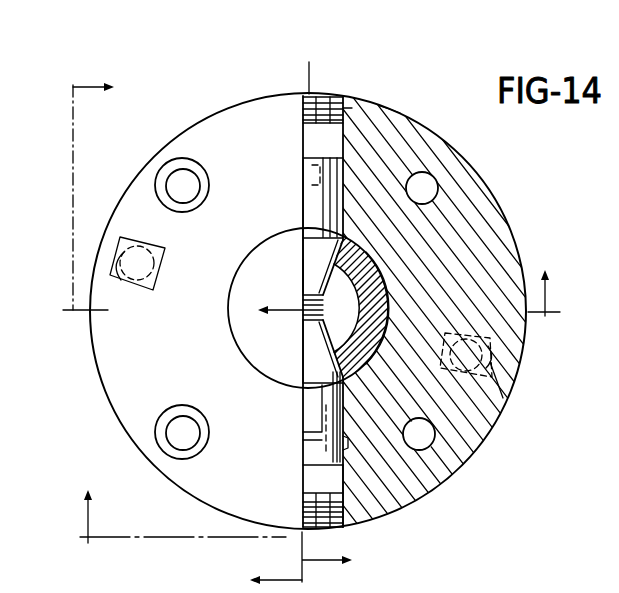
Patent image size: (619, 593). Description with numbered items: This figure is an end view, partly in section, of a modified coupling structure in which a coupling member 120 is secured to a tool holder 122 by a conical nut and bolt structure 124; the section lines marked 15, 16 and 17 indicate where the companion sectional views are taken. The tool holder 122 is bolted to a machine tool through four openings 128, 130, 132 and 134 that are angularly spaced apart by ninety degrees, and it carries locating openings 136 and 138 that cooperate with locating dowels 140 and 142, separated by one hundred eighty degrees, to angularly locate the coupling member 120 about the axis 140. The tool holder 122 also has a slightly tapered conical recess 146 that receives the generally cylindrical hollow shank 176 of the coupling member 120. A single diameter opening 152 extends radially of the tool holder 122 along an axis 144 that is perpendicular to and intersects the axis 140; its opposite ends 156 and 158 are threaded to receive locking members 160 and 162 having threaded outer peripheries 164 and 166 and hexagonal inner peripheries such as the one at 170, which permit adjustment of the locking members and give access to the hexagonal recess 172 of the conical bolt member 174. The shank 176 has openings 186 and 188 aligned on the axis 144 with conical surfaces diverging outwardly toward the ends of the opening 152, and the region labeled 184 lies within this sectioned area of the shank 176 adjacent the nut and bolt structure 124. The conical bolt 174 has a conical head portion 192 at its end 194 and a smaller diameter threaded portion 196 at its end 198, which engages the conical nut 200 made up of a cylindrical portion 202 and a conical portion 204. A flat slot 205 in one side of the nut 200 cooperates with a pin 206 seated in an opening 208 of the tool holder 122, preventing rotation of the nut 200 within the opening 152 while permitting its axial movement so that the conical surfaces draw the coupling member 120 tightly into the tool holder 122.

The section line 15- 15 is at (208, 326).
The section line 16- 16 is at (320, 406).
The section line 17- 17 is at (264, 444).
The coupling member 120 is at (350, 247).
The tool holder 122 is at (102, 387).
The conical nut and bolt structure 124 is at (343, 205).
The opening 128 is at (437, 438).
The opening 130 is at (432, 180).
The opening 132 is at (186, 178).
The opening 134 is at (175, 428).
The locating opening 136 is at (488, 352).
The locating opening 138 is at (121, 282).
The axis 140 is at (303, 313).
The locating dowel 142 is at (165, 251).
The axis 144 is at (304, 75).
The tapered recess 146 is at (372, 284).
The single diameter opening 152 is at (340, 152).
The end 156 is at (335, 523).
The end 158 is at (358, 110).
The locking member 160 is at (300, 500).
The locking member 162 is at (303, 107).
The threaded outer periphery 164 is at (340, 514).
The threaded outer periphery 166 is at (392, 122).
The hexagonal inner periphery 170 is at (320, 100).
The hexagonal recess 172 is at (310, 168).
The conical bolt member 174 is at (343, 172).
The hollow shank 176 is at (375, 348).
The annular seat 184 is at (370, 265).
The opening 186 is at (303, 252).
The opening 188 is at (303, 360).
The conical head portion 192 is at (303, 195).
The end 194 is at (303, 147).
The threaded portion 196 is at (305, 404).
The end 198 is at (302, 443).
The conical nut 200 is at (310, 428).
The cylindrical portion 202 is at (305, 462).
The conical portion 204 is at (378, 320).
The flat slot 205 is at (340, 405).
The pin 206 is at (340, 432).
The opening 208 is at (347, 448).